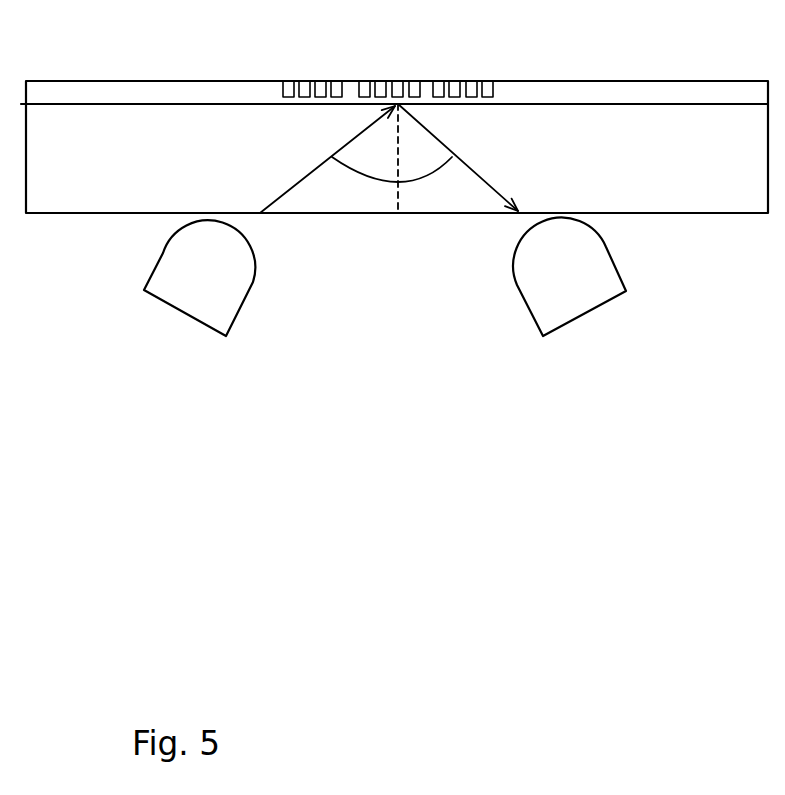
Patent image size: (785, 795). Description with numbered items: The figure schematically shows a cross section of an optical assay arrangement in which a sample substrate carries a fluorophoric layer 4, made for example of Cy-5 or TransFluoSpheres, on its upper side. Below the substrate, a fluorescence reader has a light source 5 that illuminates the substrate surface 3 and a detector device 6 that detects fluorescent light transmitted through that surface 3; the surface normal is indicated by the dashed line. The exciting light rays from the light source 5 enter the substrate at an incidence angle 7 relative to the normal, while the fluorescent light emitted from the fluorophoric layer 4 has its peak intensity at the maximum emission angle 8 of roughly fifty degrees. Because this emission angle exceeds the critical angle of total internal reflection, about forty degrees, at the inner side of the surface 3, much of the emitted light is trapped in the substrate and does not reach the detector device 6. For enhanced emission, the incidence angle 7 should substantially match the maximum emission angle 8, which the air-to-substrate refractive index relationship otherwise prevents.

The substrate surface 3 is at (55, 212).
The fluorophoric layer 4 is at (371, 96).
The light source 5 is at (194, 320).
The detector device 6 is at (569, 320).
The incidence angle 7 is at (356, 158).
The maximum emission angle 8 is at (458, 157).